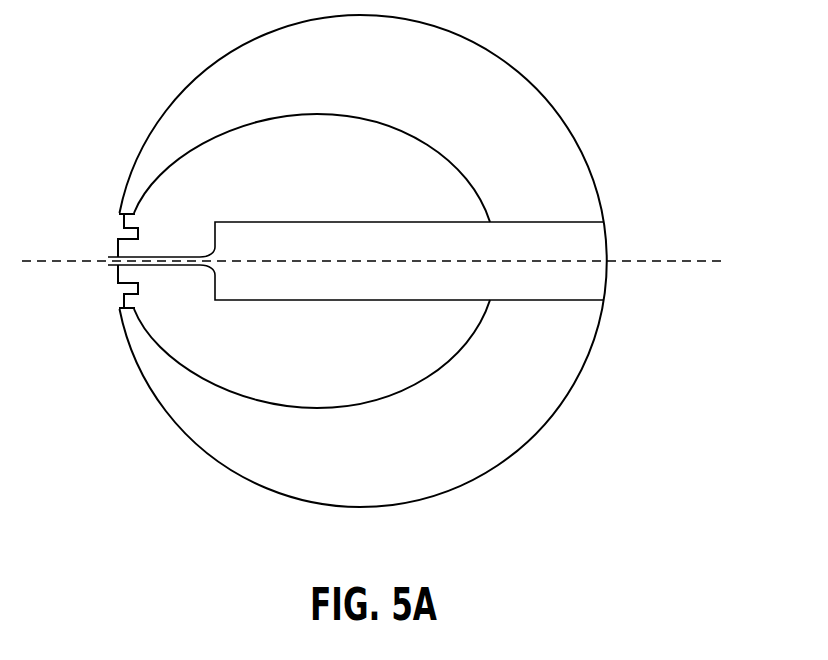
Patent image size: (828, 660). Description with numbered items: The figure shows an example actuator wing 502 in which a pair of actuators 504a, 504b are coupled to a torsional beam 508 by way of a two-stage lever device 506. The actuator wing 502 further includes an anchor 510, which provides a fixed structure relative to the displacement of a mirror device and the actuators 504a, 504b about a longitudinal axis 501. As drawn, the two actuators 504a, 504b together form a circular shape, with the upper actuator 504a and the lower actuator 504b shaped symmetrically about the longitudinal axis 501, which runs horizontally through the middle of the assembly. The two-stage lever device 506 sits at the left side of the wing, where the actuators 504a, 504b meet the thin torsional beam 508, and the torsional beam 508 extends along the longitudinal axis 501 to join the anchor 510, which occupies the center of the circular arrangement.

The longitudinal axis 501 is at (672, 259).
The actuator wing 502 is at (118, 70).
The actuator 504a is at (413, 83).
The actuator 504b is at (413, 463).
The two-stage lever device 506 is at (168, 206).
The torsional beam 508 is at (181, 266).
The anchor 510 is at (407, 293).